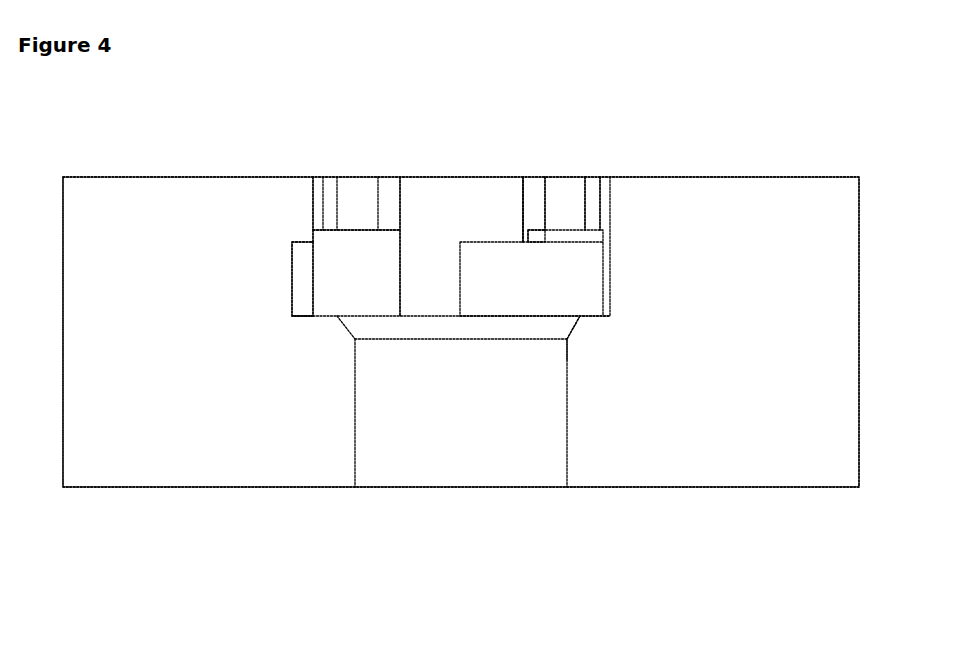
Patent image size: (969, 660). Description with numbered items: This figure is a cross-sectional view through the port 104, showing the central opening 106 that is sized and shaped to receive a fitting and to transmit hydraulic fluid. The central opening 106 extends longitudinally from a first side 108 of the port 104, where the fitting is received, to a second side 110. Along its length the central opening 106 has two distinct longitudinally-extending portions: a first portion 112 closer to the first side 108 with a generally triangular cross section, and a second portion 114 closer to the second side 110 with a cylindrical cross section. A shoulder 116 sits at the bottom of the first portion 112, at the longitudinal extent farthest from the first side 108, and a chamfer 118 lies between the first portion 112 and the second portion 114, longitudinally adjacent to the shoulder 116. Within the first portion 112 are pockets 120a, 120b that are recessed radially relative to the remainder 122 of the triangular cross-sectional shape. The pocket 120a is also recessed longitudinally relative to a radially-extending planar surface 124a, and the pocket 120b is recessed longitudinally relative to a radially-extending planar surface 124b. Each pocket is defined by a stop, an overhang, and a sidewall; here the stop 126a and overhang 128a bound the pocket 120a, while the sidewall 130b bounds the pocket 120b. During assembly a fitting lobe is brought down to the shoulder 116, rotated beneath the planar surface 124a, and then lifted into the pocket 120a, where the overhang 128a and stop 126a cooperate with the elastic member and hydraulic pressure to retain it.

The port 104 is at (77, 572).
The central opening 106 is at (443, 147).
The first side 108 is at (742, 177).
The second side 110 is at (759, 487).
The first portion 112 is at (250, 181).
The second portion 114 is at (250, 338).
The shoulder 116 is at (594, 320).
The chamfer 118 is at (573, 332).
The pocket 120a is at (557, 243).
The pocket 120b is at (355, 243).
The remainder 122 is at (463, 215).
The radially-extending planar surface 124a is at (503, 250).
The radially-extending planar surface 124b is at (301, 251).
The stop 126a is at (535, 232).
The overhang 128a is at (562, 212).
The sidewall 130b is at (328, 265).